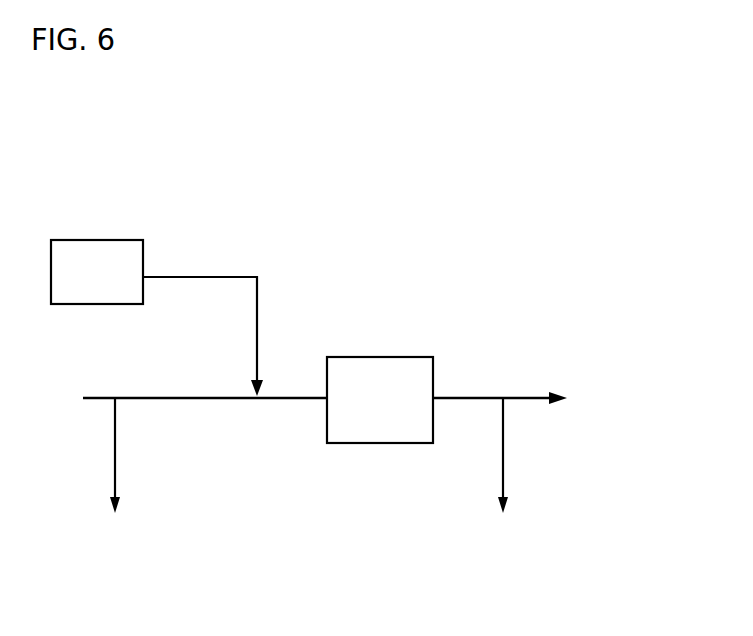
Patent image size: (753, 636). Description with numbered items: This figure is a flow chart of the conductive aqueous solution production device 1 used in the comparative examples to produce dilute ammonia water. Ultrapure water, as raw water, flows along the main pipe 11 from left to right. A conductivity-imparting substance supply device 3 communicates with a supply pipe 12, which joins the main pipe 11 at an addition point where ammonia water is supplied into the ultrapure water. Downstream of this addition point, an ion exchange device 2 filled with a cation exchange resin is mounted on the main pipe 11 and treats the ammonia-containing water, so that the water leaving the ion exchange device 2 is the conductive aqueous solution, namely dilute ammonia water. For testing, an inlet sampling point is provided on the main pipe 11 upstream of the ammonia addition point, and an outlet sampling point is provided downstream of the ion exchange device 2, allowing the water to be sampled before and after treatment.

The conductive aqueous solution production device 1 is at (419, 249).
The ion exchange device 2 is at (352, 443).
The conductivity-imparting substance supply device 3 is at (96, 240).
The main pipe 11 is at (173, 400).
The supply pipe 12 is at (222, 275).